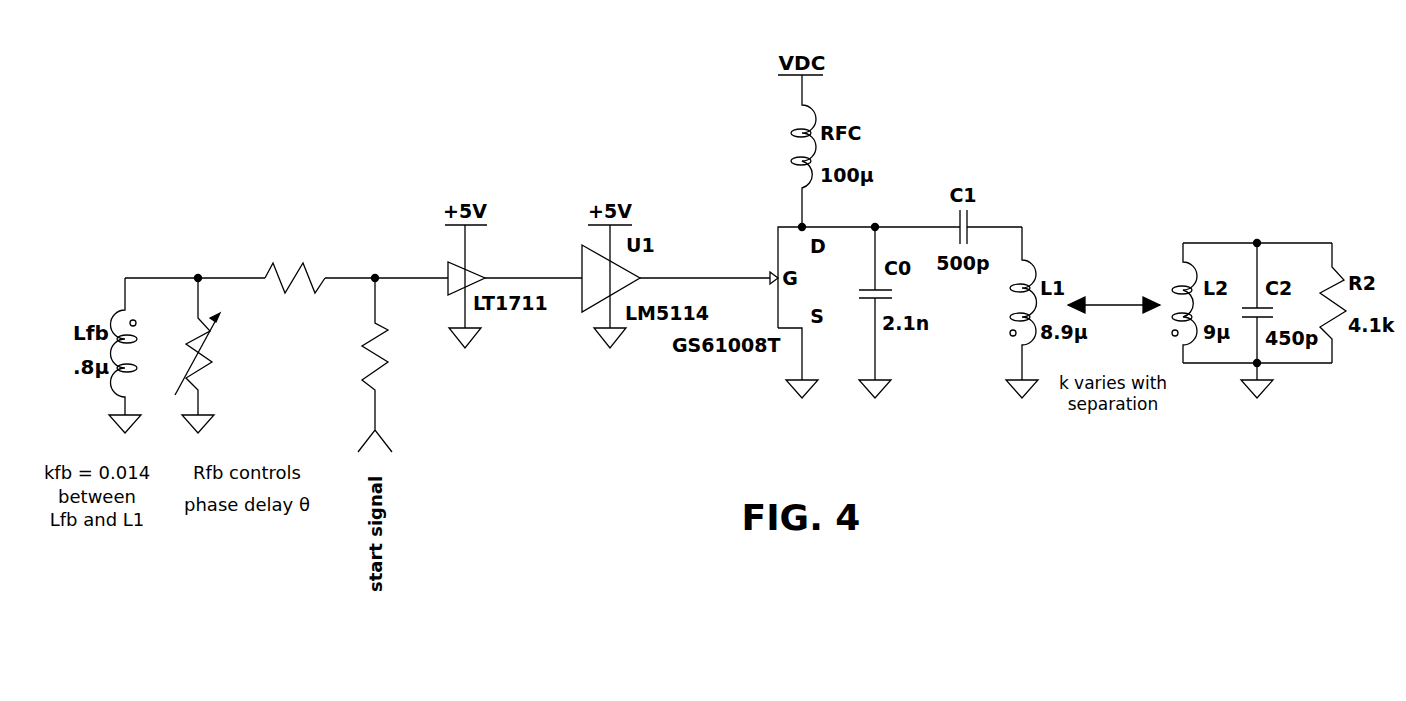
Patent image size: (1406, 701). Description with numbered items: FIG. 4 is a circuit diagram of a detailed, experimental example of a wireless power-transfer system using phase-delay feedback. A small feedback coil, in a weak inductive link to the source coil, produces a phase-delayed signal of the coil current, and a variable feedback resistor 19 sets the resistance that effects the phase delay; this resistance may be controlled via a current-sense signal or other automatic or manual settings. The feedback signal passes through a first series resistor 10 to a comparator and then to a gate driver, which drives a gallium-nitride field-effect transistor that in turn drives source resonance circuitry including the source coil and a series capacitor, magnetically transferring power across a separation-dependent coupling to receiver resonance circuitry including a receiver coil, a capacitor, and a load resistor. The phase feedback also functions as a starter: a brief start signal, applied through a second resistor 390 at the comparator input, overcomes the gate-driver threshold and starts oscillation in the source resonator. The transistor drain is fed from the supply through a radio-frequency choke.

The resistor Rs1 10 is at (295, 280).
The variable resistor Rfb 19 is at (215, 355).
The resistor Rs2 390 is at (396, 365).